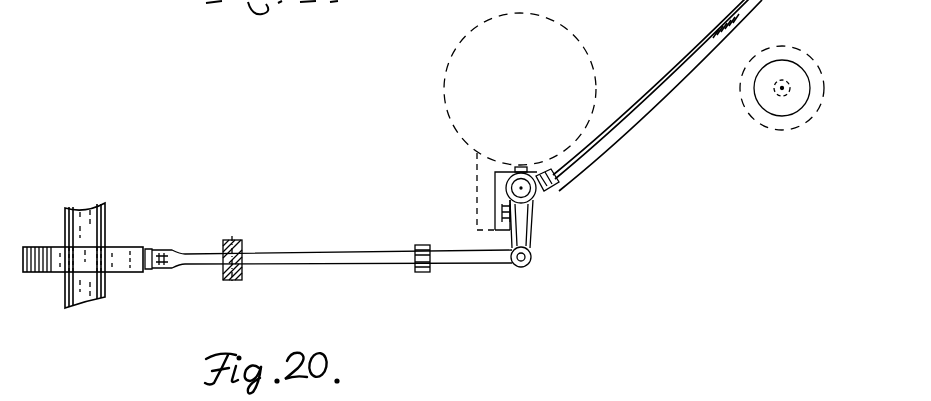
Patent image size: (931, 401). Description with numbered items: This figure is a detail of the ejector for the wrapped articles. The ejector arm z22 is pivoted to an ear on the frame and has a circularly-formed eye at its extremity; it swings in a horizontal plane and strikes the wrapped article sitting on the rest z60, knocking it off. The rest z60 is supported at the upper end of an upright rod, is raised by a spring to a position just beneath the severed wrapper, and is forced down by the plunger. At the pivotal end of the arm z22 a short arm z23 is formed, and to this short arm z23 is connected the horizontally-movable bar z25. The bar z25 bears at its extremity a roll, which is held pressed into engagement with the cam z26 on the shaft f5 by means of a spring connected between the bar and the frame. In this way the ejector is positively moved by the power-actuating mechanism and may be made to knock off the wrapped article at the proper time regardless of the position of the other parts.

The shaft f5 is at (93, 236).
The cam z26 is at (137, 246).
The horizontally-movable bar z25 is at (340, 253).
The short arm z23 is at (520, 237).
The ejector arm z22 is at (703, 53).
The rest z60 is at (777, 97).